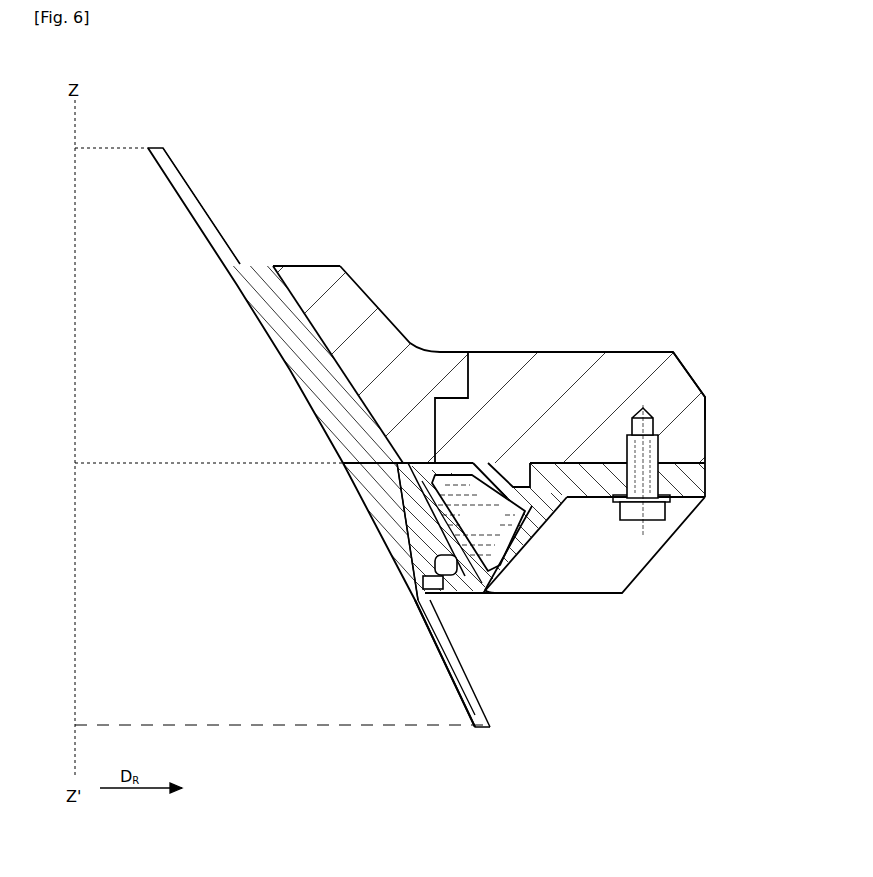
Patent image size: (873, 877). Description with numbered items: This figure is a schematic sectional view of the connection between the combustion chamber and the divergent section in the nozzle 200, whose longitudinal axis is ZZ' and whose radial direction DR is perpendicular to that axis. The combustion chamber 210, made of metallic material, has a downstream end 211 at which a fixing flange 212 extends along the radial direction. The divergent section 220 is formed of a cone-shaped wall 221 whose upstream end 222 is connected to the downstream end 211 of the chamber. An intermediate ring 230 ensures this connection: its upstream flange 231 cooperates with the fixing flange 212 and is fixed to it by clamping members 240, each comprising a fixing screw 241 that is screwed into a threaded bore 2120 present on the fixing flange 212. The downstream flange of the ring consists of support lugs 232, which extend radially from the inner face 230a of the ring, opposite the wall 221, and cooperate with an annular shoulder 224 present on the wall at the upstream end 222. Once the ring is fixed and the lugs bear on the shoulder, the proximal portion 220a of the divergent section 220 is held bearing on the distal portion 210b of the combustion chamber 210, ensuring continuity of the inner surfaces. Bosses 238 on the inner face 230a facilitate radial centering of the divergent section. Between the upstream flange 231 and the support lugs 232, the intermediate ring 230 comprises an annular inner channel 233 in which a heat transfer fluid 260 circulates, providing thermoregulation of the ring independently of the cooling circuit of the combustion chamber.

The nozzle 200 is at (482, 184).
The combustion chamber 210 is at (183, 180).
The distal portion of the combustion chamber 210b is at (357, 470).
The downstream end of the combustion chamber 211 is at (290, 357).
The fixing flange 212 is at (620, 350).
The threaded bore 2120 is at (657, 443).
The divergent section 220 is at (495, 700).
The proximal portion of the divergent section 220a is at (209, 446).
The cone-shaped wall 221 is at (467, 662).
The upstream end of the divergent section 222 is at (410, 567).
The annular shoulder 224 is at (425, 586).
The intermediate ring 230 is at (655, 595).
The inner face of the intermediate ring 230a is at (410, 520).
The upstream flange 231 is at (700, 480).
The support lugs 232 is at (470, 597).
The inner channel 233 is at (499, 467).
The bosses 238 is at (387, 537).
The clamping members 240 is at (670, 520).
The fixing screw 241 is at (662, 452).
The heat transfer fluid 260 is at (473, 529).